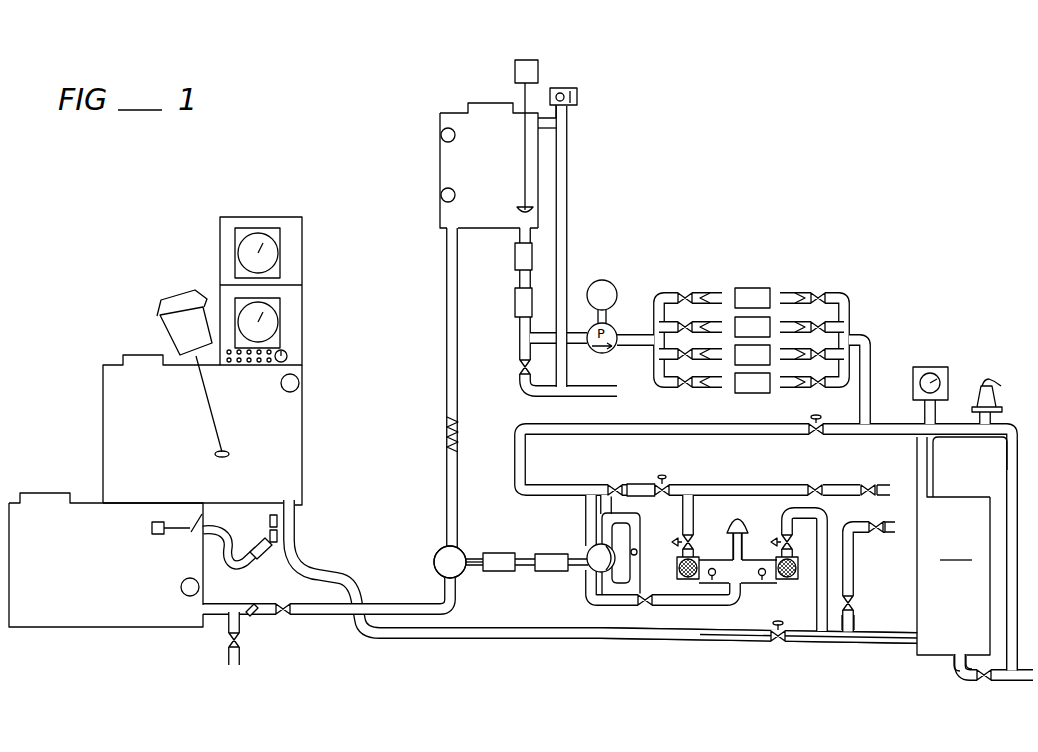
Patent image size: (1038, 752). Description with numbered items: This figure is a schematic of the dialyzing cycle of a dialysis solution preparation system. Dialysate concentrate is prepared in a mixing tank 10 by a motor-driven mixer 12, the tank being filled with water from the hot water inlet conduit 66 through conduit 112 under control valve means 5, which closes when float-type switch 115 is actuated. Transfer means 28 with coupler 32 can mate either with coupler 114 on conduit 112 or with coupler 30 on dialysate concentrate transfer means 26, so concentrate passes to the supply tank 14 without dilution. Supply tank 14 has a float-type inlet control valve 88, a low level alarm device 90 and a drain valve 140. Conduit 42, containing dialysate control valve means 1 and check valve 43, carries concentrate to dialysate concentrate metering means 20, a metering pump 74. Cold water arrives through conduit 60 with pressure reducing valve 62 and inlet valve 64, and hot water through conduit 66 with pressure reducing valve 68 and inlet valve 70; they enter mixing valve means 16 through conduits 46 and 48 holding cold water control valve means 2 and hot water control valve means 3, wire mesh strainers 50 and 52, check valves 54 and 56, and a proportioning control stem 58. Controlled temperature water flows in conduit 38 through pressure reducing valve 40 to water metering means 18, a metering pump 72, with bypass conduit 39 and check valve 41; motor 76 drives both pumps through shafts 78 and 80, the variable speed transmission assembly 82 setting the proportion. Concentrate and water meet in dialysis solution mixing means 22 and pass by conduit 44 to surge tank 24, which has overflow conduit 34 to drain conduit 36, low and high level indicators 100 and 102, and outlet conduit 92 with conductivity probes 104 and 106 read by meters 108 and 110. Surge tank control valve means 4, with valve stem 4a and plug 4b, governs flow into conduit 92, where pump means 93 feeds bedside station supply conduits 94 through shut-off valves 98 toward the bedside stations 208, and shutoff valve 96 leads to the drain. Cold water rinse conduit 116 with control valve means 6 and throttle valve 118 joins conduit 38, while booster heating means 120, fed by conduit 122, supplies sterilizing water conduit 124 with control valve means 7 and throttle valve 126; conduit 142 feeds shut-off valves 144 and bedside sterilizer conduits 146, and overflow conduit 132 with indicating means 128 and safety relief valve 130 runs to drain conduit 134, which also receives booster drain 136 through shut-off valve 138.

The dialysate control valve means 1 is at (285, 618).
The cold water control valve means 2 is at (676, 548).
The hot water control valve means 3 is at (777, 543).
The surge tank control valve means 4 is at (510, 69).
The valve stem 4a is at (524, 168).
The plug 4b is at (518, 211).
The control valve means 5 is at (778, 645).
The control valve means 6 is at (664, 482).
The control valve means 7 is at (819, 436).
The mixing tank 10 is at (103, 354).
The motor-driven mixer 12 is at (161, 300).
The supply tank 14 is at (20, 489).
The mixing valve means 16 is at (741, 522).
The water metering means 18 is at (588, 539).
The dialysate concentrate metering means 20 is at (472, 547).
The dialysis solution mixing means 22 is at (446, 432).
The surge tank 24 is at (440, 219).
The dialysate concentrate transfer means 26 is at (247, 548).
The transfer means 28 is at (300, 511).
The quick disconnect coupler 30 is at (266, 562).
The quick disconnect coupler 32 is at (279, 521).
The overflow conduit 34 is at (569, 187).
The drain conduit 36 is at (598, 391).
The conduit 38 is at (586, 510).
The bypass conduit 39 is at (634, 520).
The pressure reducing valve 40 is at (650, 607).
The check valve 41 is at (636, 551).
The conduit 42 is at (345, 620).
The check valve 43 is at (256, 600).
The conduit 44 is at (446, 385).
The conduit 46 is at (693, 517).
The conduit 48 is at (790, 537).
The wire mesh strainer 50 is at (686, 579).
The wire mesh strainer 52 is at (792, 580).
The cold water check valve 54 is at (714, 580).
The hot water check valve 56 is at (764, 580).
The proportioning control stem 58 is at (732, 548).
The conduit 60 is at (772, 485).
The pressure reducing valve 62 is at (822, 485).
The inlet valve 64 is at (872, 486).
The conduit 66 is at (854, 620).
The pressure reducing valve 68 is at (854, 602).
The inlet valve 70 is at (882, 535).
The metering pump 72 is at (582, 570).
The metering pump 74 is at (434, 563).
The motor 76 is at (548, 572).
The shaft 78 is at (552, 554).
The shaft 80 is at (484, 571).
The variable speed transmission assembly 82 is at (500, 553).
The float-type inlet control valve 88 is at (152, 529).
The low level alarm device 90 is at (181, 588).
The outlet conduit 92 is at (519, 342).
The motor-driven pump means 93 is at (578, 98).
The bedside station supply conduit 94 is at (712, 290).
The shutoff valve 96 is at (518, 369).
The shut-off valve 98 is at (680, 292).
The low level indicator 100 is at (441, 195).
The high level indicator 102 is at (441, 136).
The conductivity probe 104 is at (514, 260).
The conductivity probe 106 is at (514, 300).
The conductivity meter 108 is at (280, 322).
The conductivity meter 110 is at (280, 251).
The conduit 112 is at (574, 642).
The quick disconnect coupler 114 is at (279, 541).
The float-type switch 115 is at (300, 384).
The cold water rinse conduit 116 is at (641, 484).
The throttle valve 118 is at (615, 484).
The hot water booster heating means 120 is at (962, 546).
The conduit 122 is at (868, 647).
The sterilizing water conduit 124 is at (758, 434).
The throttle valve 126 is at (742, 434).
The temperature and pressure indicating means 128 is at (936, 367).
The safety relief valve 130 is at (1001, 397).
The overflow conduit 132 is at (1006, 467).
The drain conduit 134 is at (1022, 681).
The booster heating means drain 136 is at (956, 665).
The shut-off valve 138 is at (980, 683).
The drain valve 140 is at (228, 645).
The conduit 142 is at (872, 397).
The shut-off valve 144 is at (826, 292).
The bedside sterilizer conduit 146 is at (798, 292).
The containers 208 is at (756, 277).